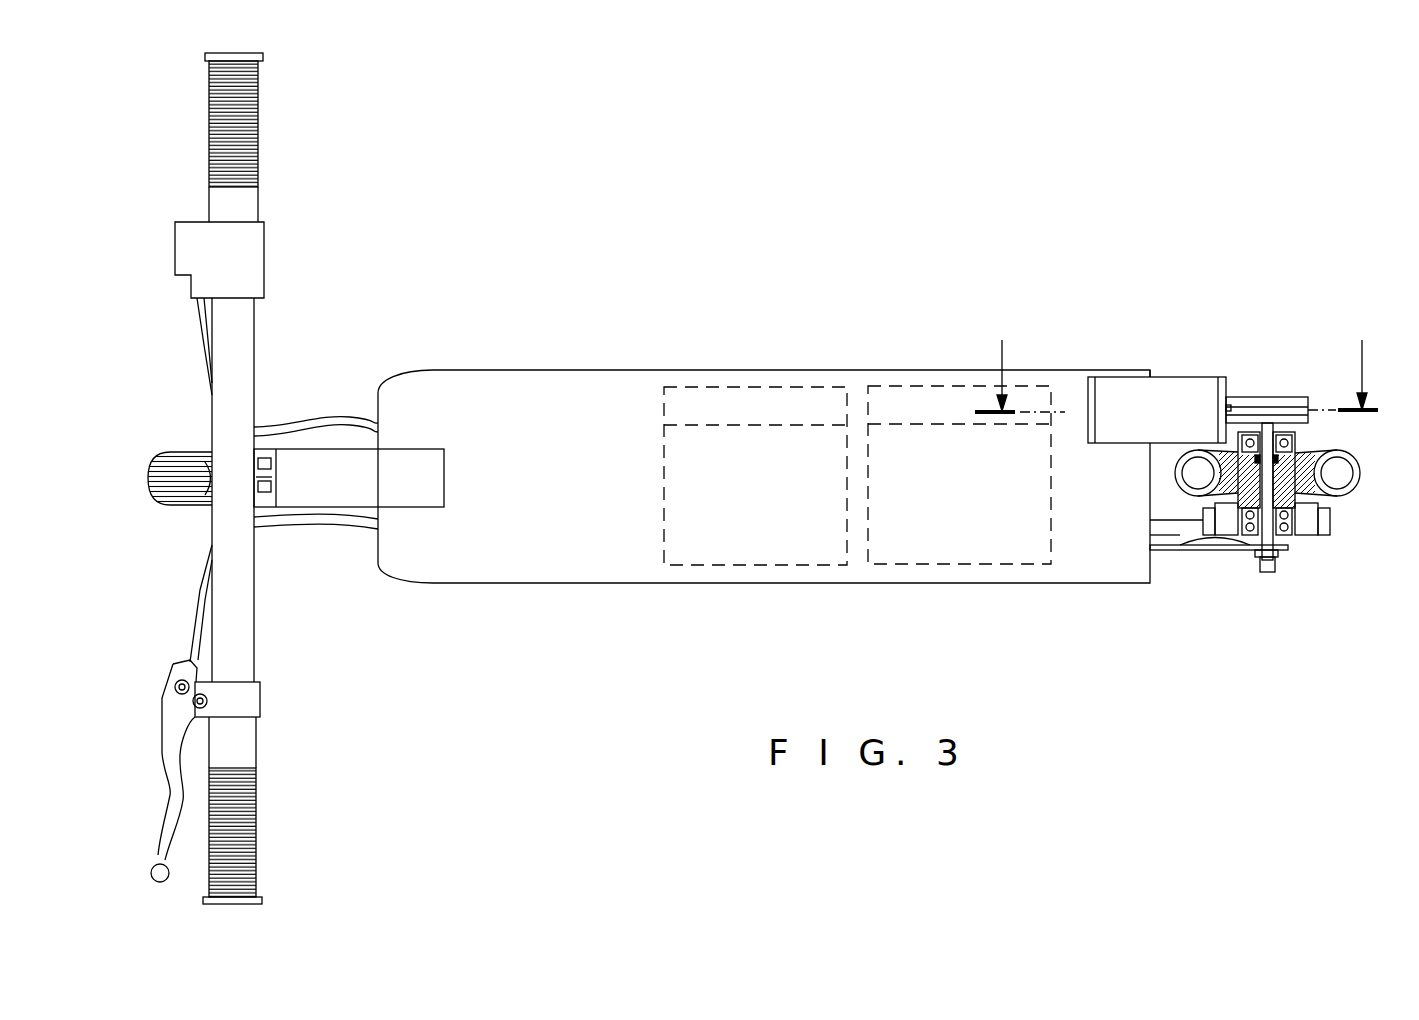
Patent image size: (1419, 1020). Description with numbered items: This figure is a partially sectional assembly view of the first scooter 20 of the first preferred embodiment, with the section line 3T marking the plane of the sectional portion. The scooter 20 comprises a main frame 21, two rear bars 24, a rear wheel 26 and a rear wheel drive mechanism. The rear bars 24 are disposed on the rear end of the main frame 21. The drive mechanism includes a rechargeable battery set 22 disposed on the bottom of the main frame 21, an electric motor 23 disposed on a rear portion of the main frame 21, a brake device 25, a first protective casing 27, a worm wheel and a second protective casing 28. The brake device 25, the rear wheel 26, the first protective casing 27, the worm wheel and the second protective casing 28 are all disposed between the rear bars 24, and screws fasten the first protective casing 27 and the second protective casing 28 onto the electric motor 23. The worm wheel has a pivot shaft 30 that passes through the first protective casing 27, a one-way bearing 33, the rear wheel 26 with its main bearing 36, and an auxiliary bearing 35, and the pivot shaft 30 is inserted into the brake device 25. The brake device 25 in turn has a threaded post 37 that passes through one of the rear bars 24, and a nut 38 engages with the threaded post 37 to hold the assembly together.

The first scooter 20 is at (342, 327).
The main frame 21 is at (540, 385).
The rechargeable battery set 22 is at (753, 397).
The section line 3T- 3T is at (1177, 357).
The electric motor 23 is at (1121, 393).
The rear bars 24 is at (1175, 551).
The brake device 25 is at (1292, 520).
The rear wheel 26 is at (1358, 472).
The first protective casing 27 is at (1305, 418).
The second protective casing 28 is at (1297, 400).
The pivot shaft 30 is at (1268, 474).
The one-way bearing 33 is at (1300, 452).
The auxiliary bearing 35 is at (1288, 537).
The main bearing 36 is at (1292, 522).
The threaded post 37 is at (1276, 568).
The nut 38 is at (1257, 557).